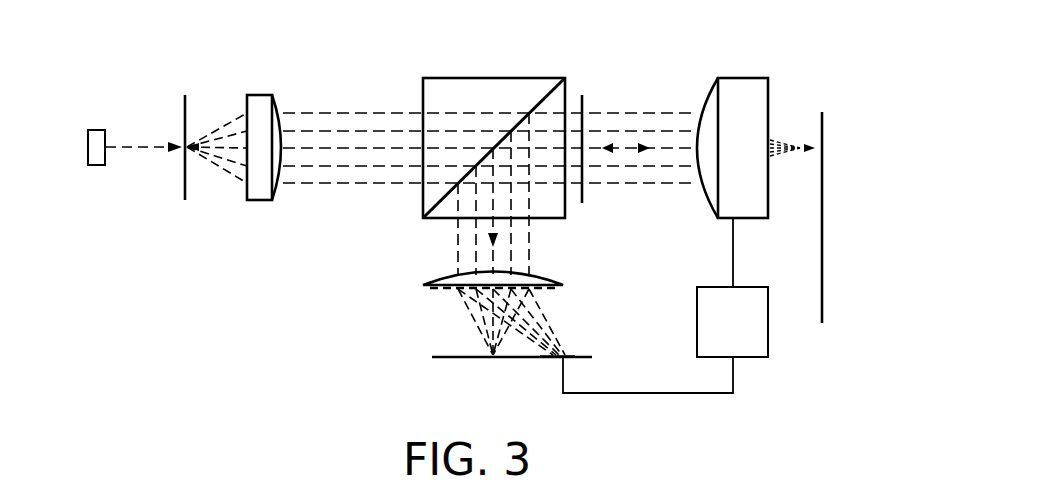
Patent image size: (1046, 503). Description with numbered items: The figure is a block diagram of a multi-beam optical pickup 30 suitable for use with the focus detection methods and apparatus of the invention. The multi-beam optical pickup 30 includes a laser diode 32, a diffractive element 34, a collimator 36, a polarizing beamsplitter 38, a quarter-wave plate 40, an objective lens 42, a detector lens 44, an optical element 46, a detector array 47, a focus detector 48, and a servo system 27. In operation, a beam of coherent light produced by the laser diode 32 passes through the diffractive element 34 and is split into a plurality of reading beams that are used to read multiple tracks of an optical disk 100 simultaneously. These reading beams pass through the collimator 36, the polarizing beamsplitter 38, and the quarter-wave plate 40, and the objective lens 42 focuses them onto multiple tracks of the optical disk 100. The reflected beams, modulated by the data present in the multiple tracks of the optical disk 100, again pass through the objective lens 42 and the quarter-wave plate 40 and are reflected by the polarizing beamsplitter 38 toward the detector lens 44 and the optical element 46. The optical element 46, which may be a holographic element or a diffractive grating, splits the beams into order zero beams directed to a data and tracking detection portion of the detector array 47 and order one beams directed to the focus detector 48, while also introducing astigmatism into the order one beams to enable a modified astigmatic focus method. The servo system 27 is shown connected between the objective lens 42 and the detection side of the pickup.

The multi-beam optical pickup 30 is at (124, 54).
The laser diode 32 is at (95, 167).
The diffractive element 34 is at (183, 183).
The collimator 36 is at (252, 203).
The polarizing beamsplitter 38 is at (447, 77).
The quarter-wave plate 40 is at (583, 95).
The objective lens 42 is at (750, 78).
The optical disk 100 is at (823, 128).
The detector lens 44 is at (430, 279).
The optical element 46 is at (430, 289).
The detector array 47 is at (438, 358).
The focus detector 48 is at (555, 358).
The servo system 27 is at (750, 359).